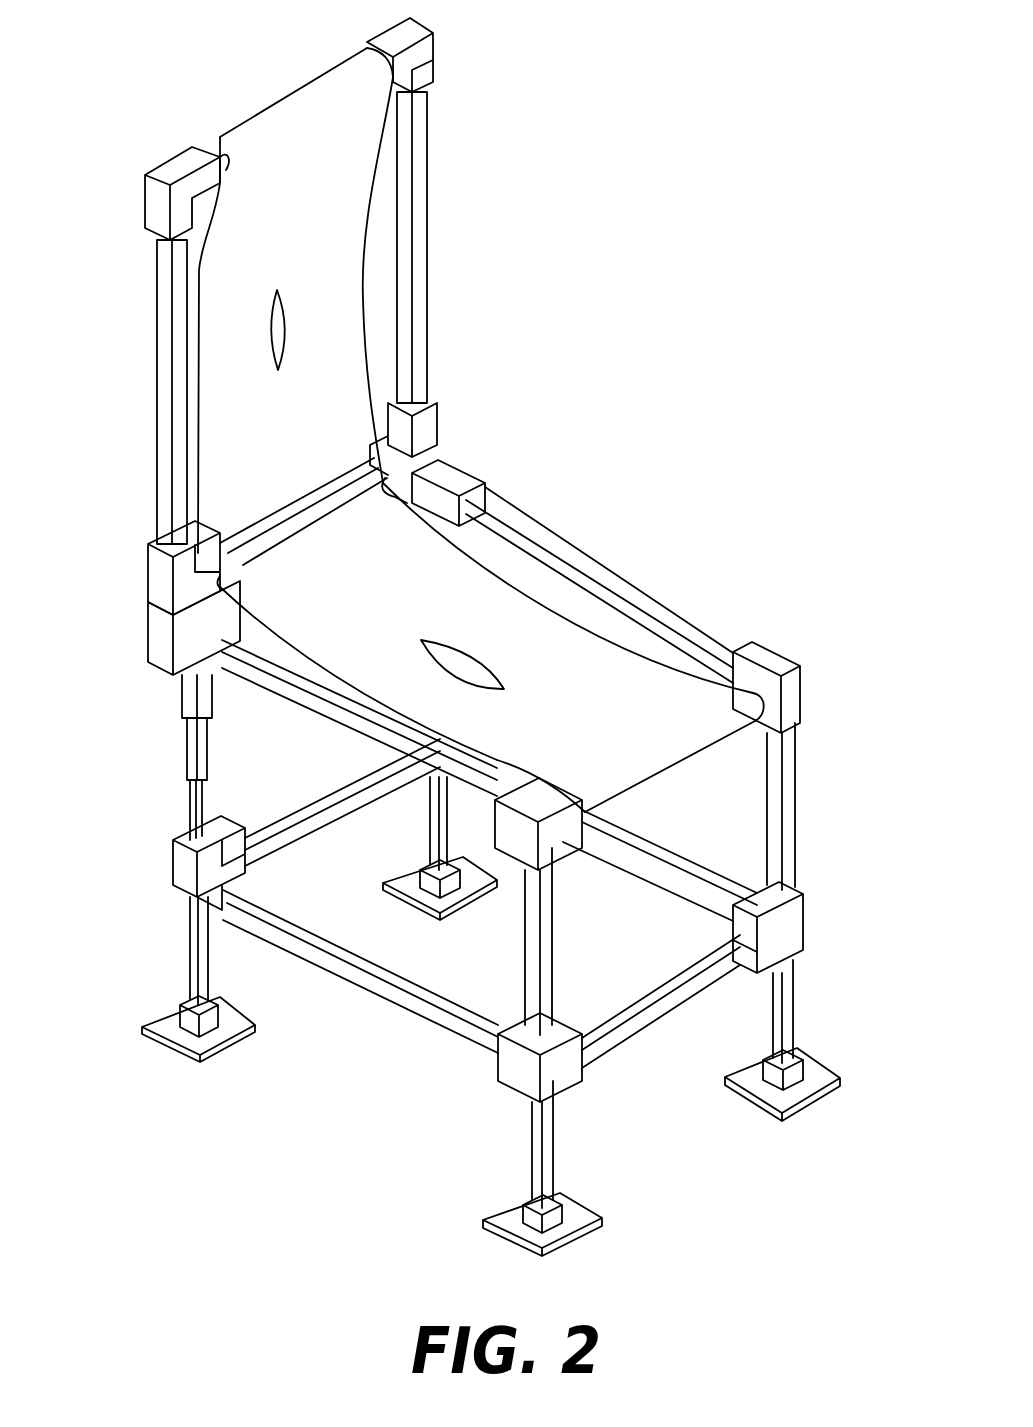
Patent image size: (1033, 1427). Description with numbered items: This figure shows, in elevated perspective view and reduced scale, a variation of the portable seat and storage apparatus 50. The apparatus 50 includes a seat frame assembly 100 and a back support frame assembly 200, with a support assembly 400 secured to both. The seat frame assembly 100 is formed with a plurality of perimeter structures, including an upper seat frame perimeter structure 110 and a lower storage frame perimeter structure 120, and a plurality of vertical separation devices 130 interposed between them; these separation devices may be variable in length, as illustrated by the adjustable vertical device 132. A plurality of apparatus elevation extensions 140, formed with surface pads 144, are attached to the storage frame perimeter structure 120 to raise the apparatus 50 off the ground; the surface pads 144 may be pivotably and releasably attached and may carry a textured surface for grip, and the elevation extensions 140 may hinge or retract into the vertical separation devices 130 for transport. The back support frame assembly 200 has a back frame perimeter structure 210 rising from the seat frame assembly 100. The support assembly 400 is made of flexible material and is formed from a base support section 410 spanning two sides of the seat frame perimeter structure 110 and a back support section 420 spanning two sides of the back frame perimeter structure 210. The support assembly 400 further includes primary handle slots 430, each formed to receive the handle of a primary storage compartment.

The apparatus 50 is at (658, 289).
The seat frame assembly 100 is at (386, 1084).
The seat frame perimeter structure 110 is at (703, 622).
The storage frame perimeter structure 120 is at (222, 838).
The vertical separation devices 130 is at (797, 866).
The adjustable vertical device 132 is at (183, 695).
The apparatus elevation extensions 140 is at (427, 847).
The surface pads 144 is at (397, 890).
The back support frame assembly 200 is at (468, 225).
The back frame perimeter structure 210 is at (220, 135).
The support assembly 400 is at (576, 581).
The base support section 410 is at (470, 553).
The back support section 420 is at (365, 273).
The primary handle slot 430 is at (267, 338).